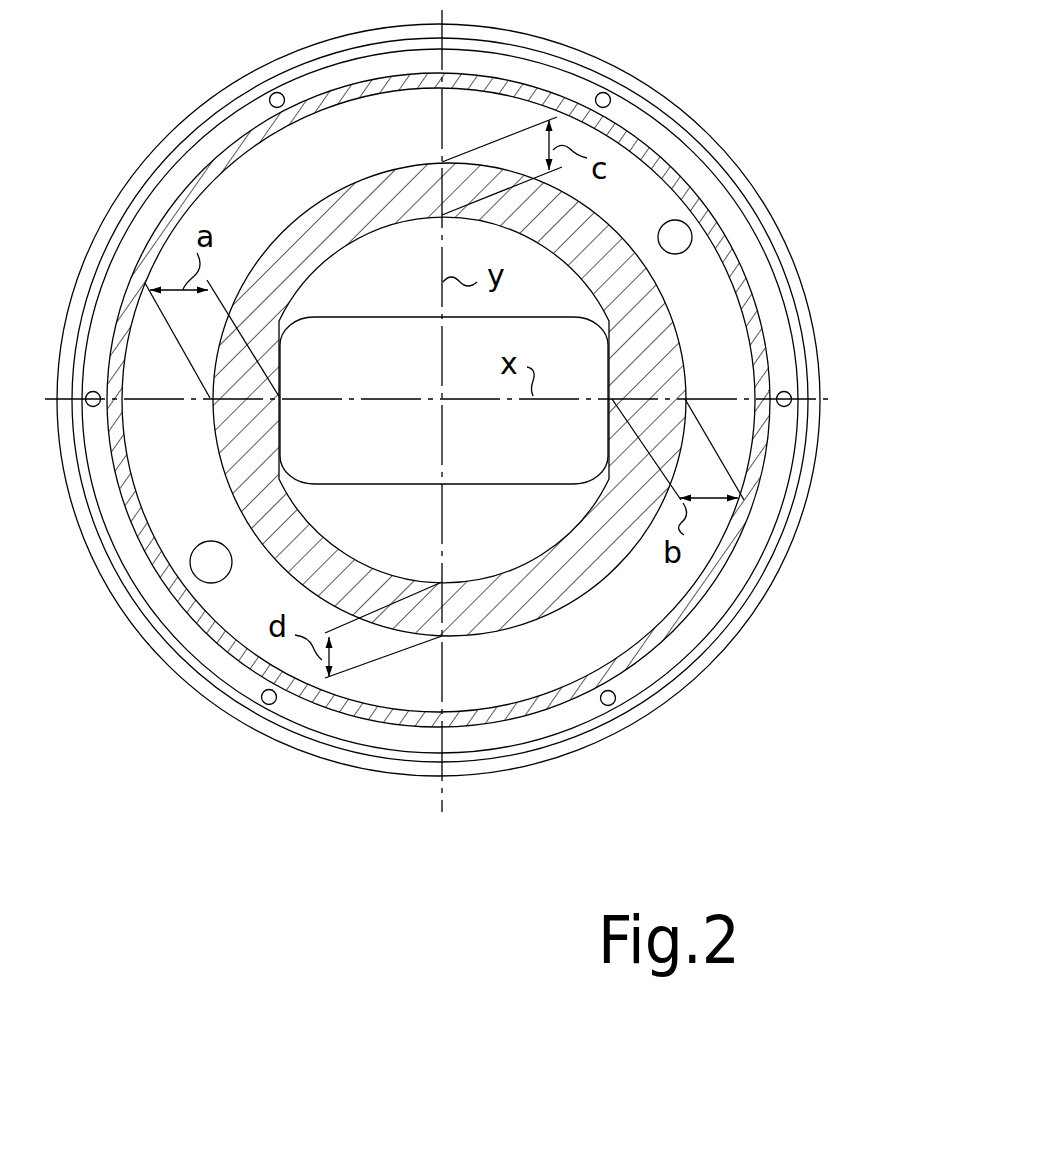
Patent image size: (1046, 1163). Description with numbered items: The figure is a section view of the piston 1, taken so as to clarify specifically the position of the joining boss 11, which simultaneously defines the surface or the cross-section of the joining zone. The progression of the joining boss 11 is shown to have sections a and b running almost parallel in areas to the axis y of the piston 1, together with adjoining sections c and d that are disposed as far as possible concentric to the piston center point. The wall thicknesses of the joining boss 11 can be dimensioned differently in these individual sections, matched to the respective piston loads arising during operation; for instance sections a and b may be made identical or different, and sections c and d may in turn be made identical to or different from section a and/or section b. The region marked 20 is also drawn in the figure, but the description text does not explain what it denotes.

The piston 1 is at (798, 252).
The joining boss 11 is at (650, 358).
The rectangular opening 20 is at (407, 532).